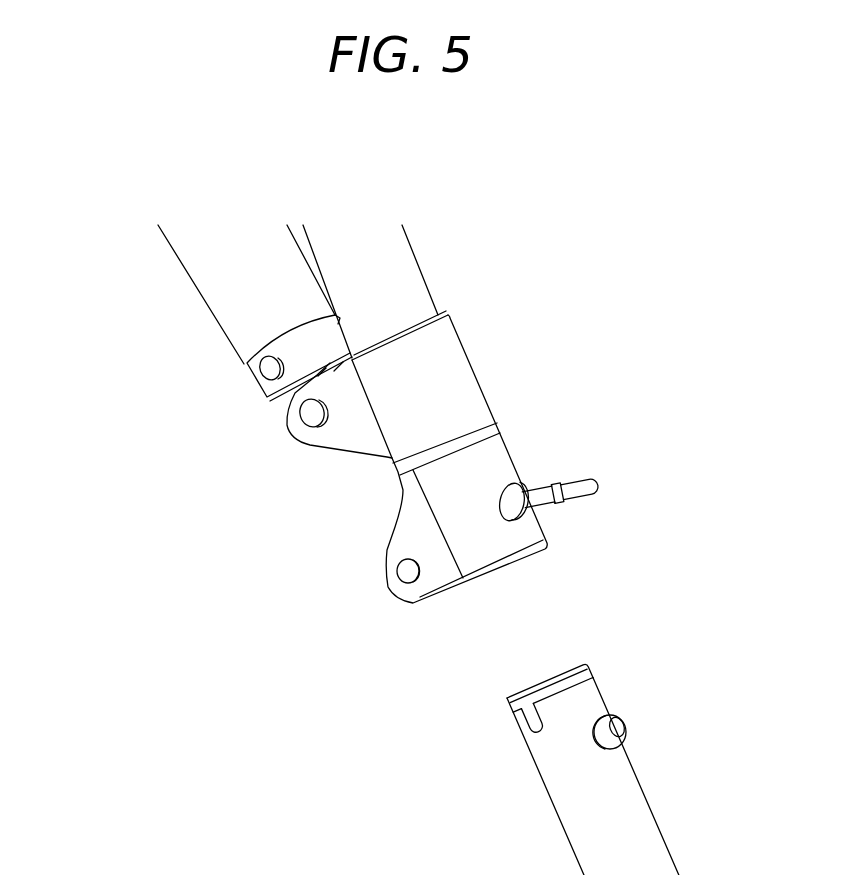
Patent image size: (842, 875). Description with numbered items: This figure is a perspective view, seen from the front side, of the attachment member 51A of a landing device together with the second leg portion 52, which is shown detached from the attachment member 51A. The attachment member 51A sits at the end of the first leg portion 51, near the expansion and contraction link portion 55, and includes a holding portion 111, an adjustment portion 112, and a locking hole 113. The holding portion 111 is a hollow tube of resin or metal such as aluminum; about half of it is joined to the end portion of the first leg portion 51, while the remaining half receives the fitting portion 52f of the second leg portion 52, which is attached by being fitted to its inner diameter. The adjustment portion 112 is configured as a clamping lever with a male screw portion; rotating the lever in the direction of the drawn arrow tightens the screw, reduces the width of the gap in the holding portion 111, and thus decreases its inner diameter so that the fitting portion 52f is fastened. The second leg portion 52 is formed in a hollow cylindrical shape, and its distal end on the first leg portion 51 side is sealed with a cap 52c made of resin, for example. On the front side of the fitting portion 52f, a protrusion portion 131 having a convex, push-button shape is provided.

The first leg portion 51 is at (419, 268).
The attachment member 51A is at (646, 366).
The expansion and contraction link portion 55 is at (225, 313).
The holding portion 111 is at (474, 372).
The adjustment portion 112 is at (586, 507).
The locking hole 113 is at (416, 510).
The second leg portion 52 is at (543, 783).
The cap 52c is at (585, 673).
The fitting portion 52f is at (449, 725).
The protrusion portion 131 is at (625, 720).